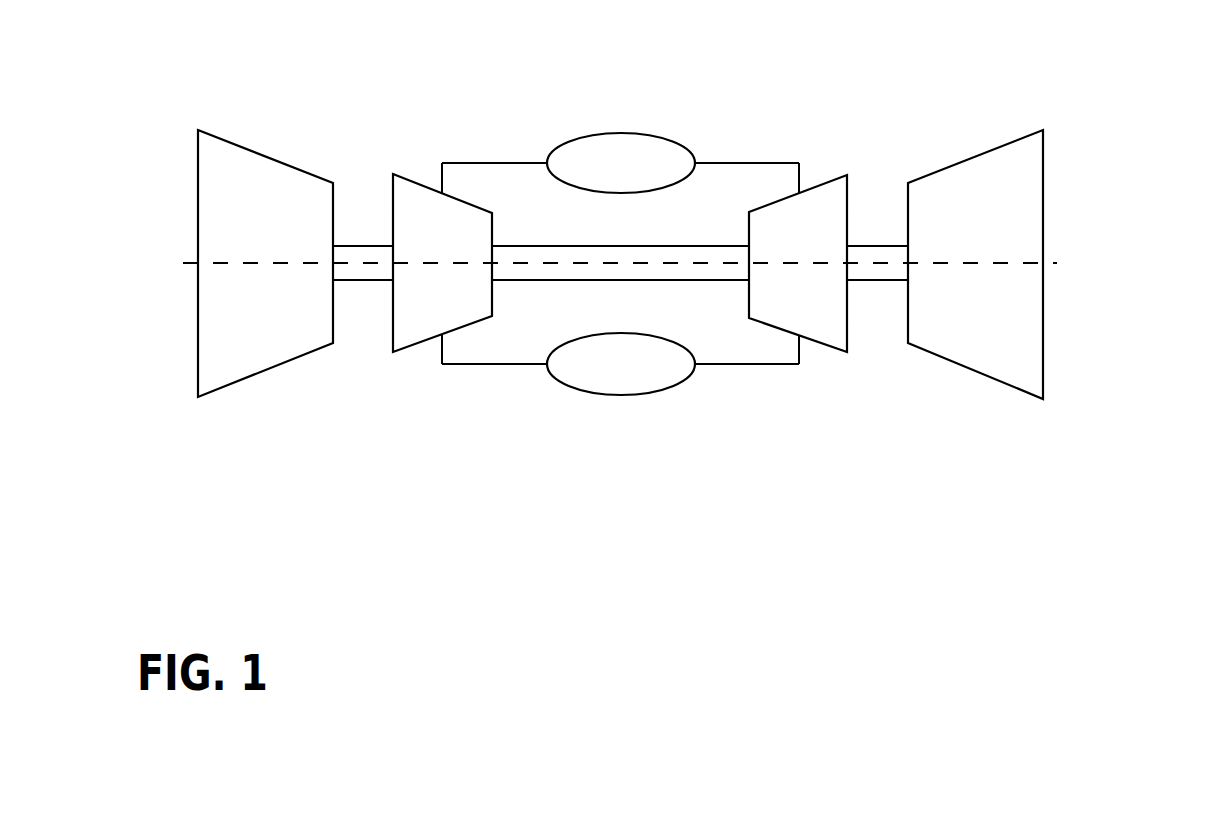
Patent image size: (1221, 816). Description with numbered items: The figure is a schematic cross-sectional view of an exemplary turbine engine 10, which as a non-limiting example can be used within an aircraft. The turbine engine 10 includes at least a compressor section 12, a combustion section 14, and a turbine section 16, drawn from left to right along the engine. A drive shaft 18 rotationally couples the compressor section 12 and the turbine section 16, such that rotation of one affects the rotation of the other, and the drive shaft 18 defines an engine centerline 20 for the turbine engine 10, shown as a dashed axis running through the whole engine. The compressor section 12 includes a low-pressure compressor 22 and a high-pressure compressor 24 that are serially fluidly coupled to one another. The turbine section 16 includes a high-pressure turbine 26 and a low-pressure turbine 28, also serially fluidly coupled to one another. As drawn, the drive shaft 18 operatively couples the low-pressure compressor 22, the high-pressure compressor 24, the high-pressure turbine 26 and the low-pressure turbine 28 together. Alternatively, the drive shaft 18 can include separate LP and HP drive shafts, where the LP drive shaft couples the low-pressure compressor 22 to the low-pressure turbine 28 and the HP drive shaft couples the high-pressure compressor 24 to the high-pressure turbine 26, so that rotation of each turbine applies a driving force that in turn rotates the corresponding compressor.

The turbine engine 10 is at (1220, 142).
The compressor section 12 is at (304, 121).
The combustion section 14 is at (580, 392).
The turbine section 16 is at (973, 118).
The drive shaft 18 is at (627, 246).
The engine centerline 20 is at (1053, 263).
The low-pressure compressor 22 is at (302, 167).
The high-pressure compressor 24 is at (414, 181).
The high-pressure turbine 26 is at (849, 205).
The low-pressure turbine 28 is at (1045, 180).